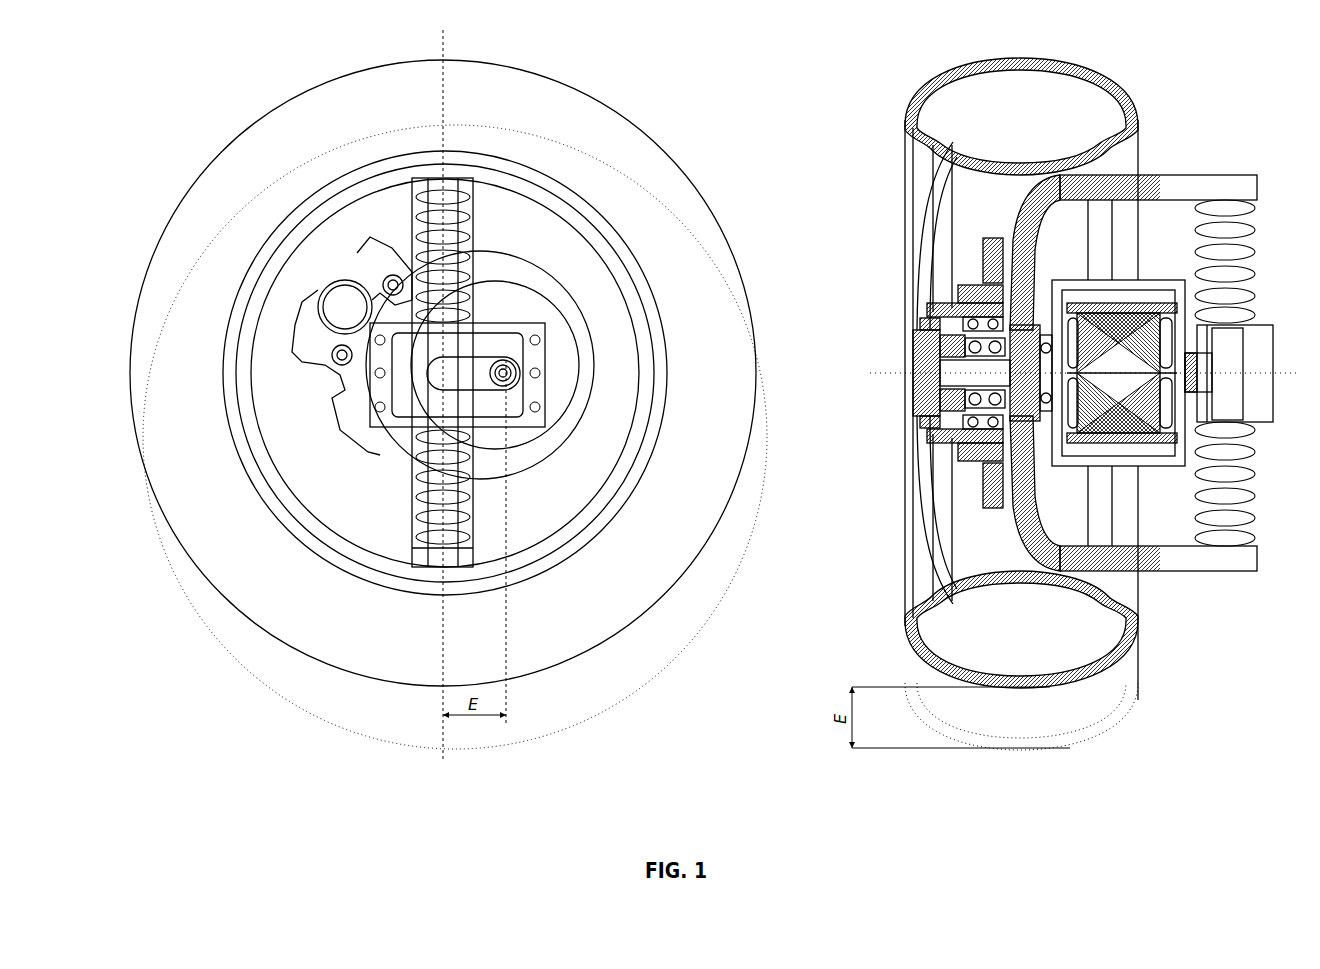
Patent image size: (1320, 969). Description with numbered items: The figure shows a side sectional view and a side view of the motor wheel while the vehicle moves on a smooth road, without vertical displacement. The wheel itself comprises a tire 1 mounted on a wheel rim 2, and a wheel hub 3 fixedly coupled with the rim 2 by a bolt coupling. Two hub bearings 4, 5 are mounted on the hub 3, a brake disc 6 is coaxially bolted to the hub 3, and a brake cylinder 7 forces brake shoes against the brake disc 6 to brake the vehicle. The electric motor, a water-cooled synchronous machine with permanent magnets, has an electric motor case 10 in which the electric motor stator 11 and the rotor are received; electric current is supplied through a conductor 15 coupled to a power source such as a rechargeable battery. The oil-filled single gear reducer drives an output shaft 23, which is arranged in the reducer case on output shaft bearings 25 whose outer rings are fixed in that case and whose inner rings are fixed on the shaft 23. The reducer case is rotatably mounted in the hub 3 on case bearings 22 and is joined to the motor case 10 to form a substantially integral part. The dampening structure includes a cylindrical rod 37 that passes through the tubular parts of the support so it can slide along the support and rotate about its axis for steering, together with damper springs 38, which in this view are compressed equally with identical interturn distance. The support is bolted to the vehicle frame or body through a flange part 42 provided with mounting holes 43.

The tire 1 is at (1127, 93).
The wheel rim 2 is at (987, 240).
The wheel hub 3 is at (927, 348).
The hub bearing 4 is at (945, 303).
The hub bearing 5 is at (928, 250).
The brake disc 6 is at (935, 150).
The brake cylinder 7 is at (347, 293).
The electric motor case 10 is at (1130, 290).
The electric motor stator 11 is at (1115, 420).
The conductor 15 is at (1252, 402).
The case bearings 22 is at (955, 400).
The output shaft 23 is at (908, 442).
The output shaft bearings 25 is at (943, 483).
The rod 37 is at (1237, 280).
The damper springs 38 is at (1245, 255).
The flange part 42 is at (370, 410).
The mounting holes 43 is at (363, 323).